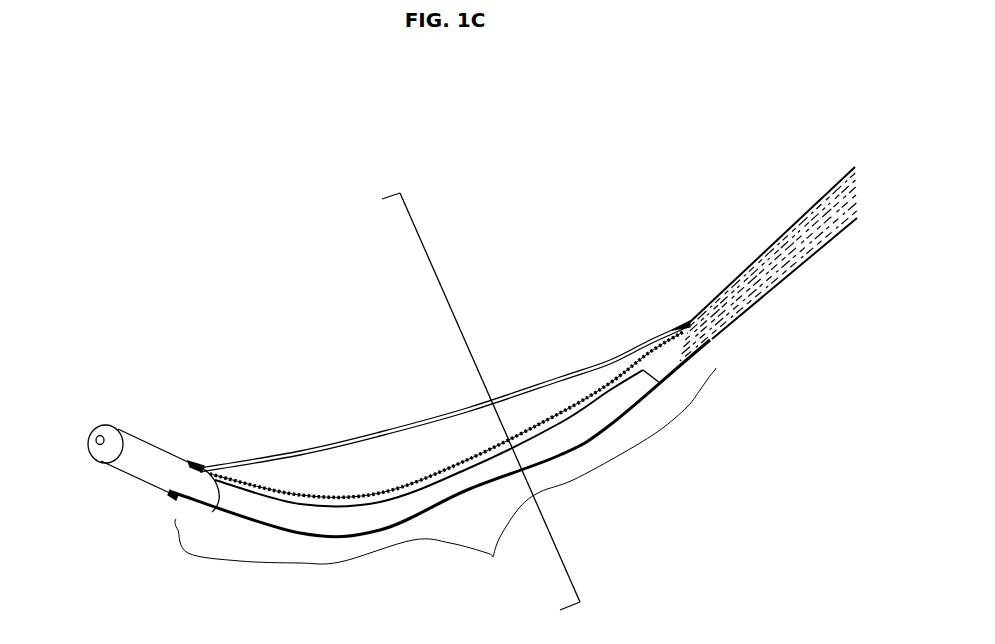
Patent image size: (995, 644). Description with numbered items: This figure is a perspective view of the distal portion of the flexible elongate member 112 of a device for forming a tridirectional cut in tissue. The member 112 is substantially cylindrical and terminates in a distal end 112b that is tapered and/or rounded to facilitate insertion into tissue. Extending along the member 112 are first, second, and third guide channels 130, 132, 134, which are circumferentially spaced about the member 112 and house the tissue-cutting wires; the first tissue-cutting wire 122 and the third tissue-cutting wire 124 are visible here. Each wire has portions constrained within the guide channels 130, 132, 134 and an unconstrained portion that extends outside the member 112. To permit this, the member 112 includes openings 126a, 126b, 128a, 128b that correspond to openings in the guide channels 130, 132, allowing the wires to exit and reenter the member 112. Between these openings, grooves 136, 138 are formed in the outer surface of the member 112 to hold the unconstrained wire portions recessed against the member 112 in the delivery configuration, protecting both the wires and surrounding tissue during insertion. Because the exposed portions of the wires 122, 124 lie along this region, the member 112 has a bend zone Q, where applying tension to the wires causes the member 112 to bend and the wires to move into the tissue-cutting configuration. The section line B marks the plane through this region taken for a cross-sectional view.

The flexible elongate member 112 is at (765, 222).
The distal end 112b is at (96, 478).
The first tissue-cutting wire 122 is at (372, 432).
The third tissue-cutting wire 124 is at (365, 532).
The opening 126a is at (686, 321).
The opening 126b is at (189, 461).
The opening 128a is at (703, 360).
The opening 128b is at (172, 497).
The first guide channel 130 is at (733, 281).
The second guide channel 132 is at (743, 294).
The third guide channel 134 is at (797, 266).
The groove 136 is at (548, 433).
The groove 138 is at (187, 510).
The bend zone Q is at (445, 474).
The section line B- B is at (467, 406).